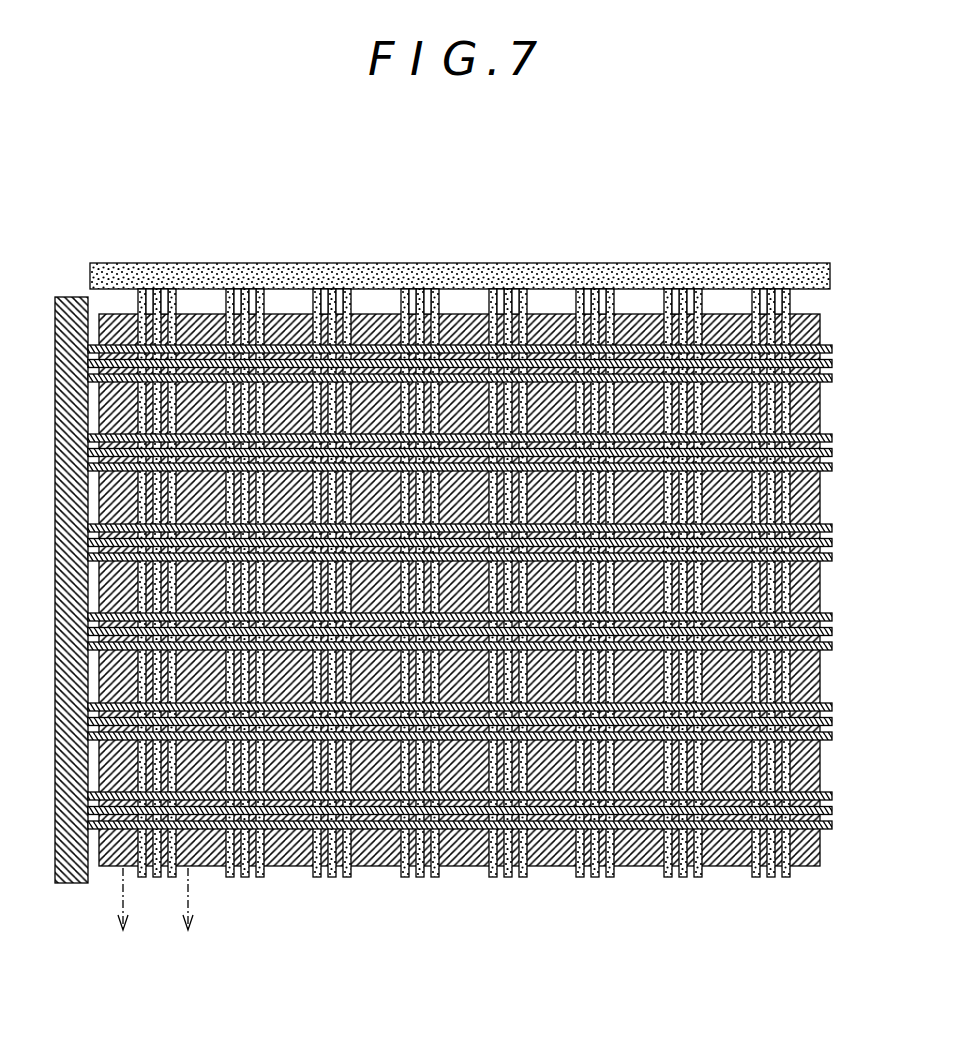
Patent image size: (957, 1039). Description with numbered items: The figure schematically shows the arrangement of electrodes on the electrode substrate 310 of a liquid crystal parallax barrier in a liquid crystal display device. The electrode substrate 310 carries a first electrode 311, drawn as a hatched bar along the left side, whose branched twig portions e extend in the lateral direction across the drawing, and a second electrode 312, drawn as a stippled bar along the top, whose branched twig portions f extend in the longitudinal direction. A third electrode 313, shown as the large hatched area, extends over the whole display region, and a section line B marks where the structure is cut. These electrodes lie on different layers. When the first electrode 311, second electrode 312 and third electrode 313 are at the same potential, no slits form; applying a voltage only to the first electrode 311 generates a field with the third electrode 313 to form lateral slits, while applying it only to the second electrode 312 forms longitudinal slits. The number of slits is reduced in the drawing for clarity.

The electrode substrate 310 is at (423, 213).
The first electrode 311 is at (64, 296).
The second electrode 312 is at (168, 266).
The third electrode 313 is at (725, 853).
The twig portions of the first electrode e is at (93, 836).
The twig portions of the second electrode f is at (154, 878).
The section line B- B is at (157, 917).